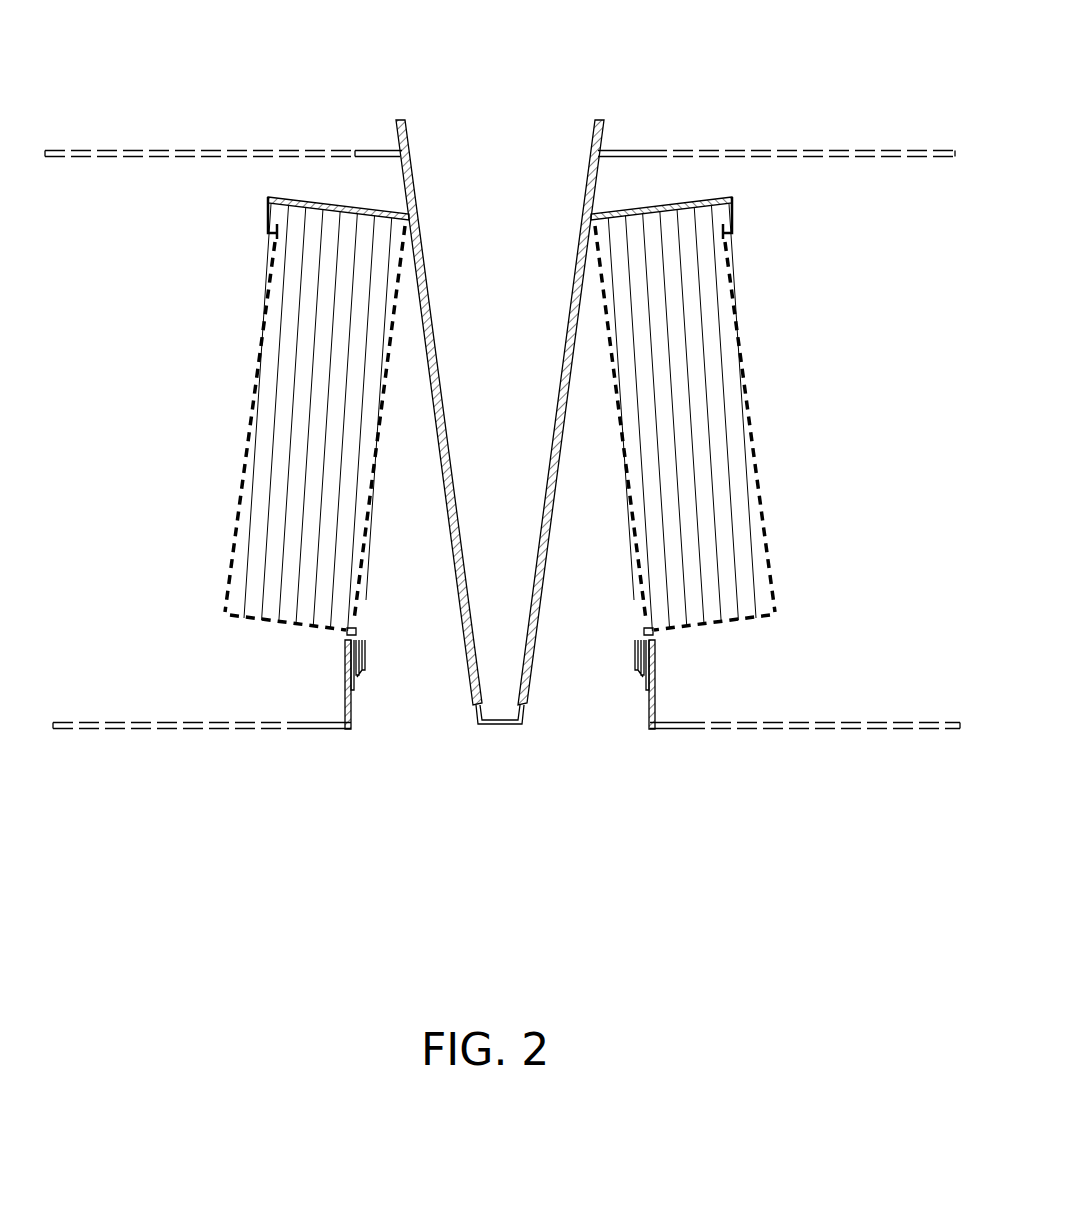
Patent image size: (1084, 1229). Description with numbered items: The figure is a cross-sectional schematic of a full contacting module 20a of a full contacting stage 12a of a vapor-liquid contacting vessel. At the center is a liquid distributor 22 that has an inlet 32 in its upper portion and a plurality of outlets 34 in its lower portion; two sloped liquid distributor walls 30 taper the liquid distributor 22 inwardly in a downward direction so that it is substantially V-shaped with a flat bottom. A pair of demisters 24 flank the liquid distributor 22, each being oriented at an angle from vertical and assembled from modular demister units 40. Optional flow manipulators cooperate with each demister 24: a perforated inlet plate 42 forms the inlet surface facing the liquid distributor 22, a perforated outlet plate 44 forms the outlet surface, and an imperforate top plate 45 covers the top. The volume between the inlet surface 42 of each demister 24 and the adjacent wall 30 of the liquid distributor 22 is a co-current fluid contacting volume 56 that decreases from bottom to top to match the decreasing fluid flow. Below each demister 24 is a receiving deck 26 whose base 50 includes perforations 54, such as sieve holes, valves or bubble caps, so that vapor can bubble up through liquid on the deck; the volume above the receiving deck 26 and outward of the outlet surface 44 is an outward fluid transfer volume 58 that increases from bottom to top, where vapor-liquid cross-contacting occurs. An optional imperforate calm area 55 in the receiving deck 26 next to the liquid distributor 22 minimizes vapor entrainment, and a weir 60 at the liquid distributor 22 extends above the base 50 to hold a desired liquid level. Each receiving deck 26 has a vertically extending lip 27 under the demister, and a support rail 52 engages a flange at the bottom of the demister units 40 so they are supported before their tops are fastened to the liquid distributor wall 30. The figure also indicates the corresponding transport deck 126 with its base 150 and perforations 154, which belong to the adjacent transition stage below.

The full contacting stage 12a is at (125, 74).
The transport deck 126 is at (266, 130).
The base of transport deck 150 is at (252, 118).
The calm area 55 is at (390, 150).
The perforations 154 is at (652, 152).
The weir 60 is at (603, 120).
The inlet 32 is at (454, 410).
The liquid distributor 22 is at (444, 464).
The liquid distributor wall 30 is at (522, 390).
The outlets 34 is at (474, 707).
The imperforate top plate 45 is at (380, 214).
The demister 24 is at (503, 409).
The demister unit 40 is at (320, 392).
The perforated outlet plate 44 is at (258, 327).
The perforated inlet plate 42 is at (396, 342).
The outward fluid transfer volume 58 is at (176, 436).
The co-current fluid contacting volume 56 is at (428, 550).
The full contacting module 20a is at (822, 448).
The receiving deck 26 is at (506, 733).
The base of receiving deck 50 is at (506, 749).
The perforations 54 is at (532, 779).
The vertically extending lip 27 is at (344, 690).
The support rail 52 is at (366, 658).